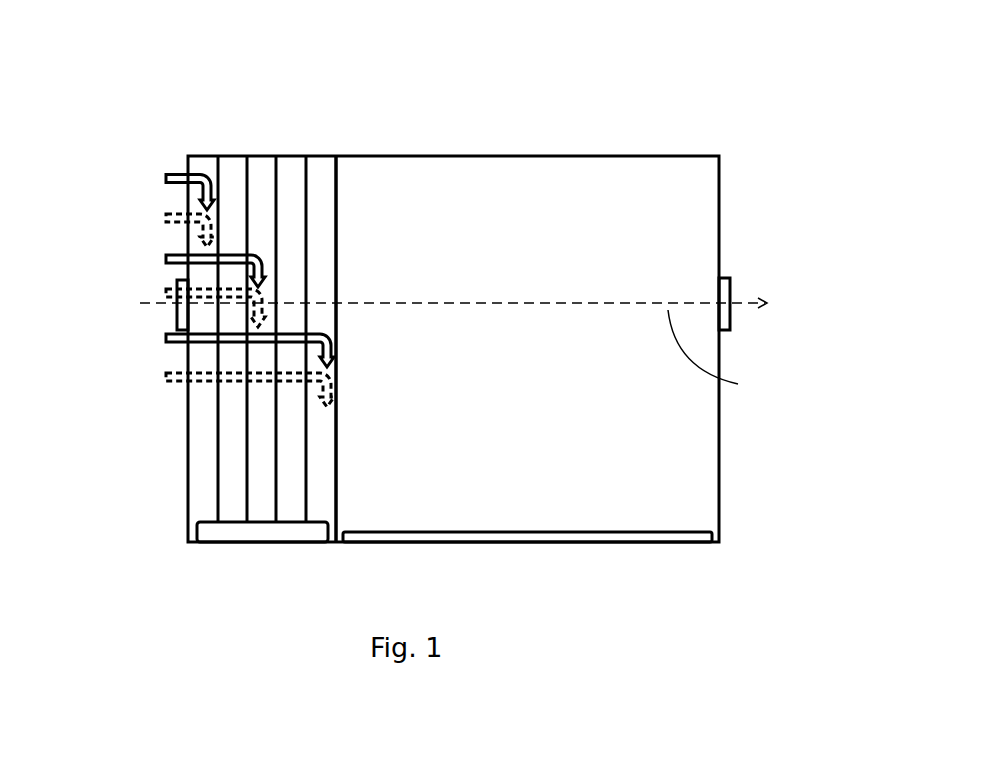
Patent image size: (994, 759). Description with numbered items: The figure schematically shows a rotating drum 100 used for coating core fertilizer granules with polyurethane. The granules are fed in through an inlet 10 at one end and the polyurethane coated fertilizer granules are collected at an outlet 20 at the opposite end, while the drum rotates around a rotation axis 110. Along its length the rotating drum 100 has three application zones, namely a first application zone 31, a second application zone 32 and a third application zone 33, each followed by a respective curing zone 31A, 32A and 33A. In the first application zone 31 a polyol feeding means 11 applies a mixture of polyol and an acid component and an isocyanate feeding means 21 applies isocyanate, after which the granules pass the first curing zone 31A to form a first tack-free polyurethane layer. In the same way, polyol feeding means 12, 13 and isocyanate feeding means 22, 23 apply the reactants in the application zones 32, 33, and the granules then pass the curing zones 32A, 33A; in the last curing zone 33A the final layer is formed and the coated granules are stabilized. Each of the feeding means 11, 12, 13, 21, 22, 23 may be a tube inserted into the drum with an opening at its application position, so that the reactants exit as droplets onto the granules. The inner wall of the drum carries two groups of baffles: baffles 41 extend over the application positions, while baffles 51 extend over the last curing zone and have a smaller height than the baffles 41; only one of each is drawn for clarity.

The rotating drum 100 is at (768, 114).
The rotation axis 110 is at (732, 353).
The inlet 10 is at (175, 286).
The outlet 20 is at (730, 297).
The polyol feeding means 11 is at (165, 181).
The polyol feeding means 12 is at (165, 259).
The polyol feeding means 13 is at (165, 340).
The isocyanate feeding means 21 is at (165, 218).
The isocyanate feeding means 22 is at (165, 296).
The isocyanate feeding means 23 is at (165, 381).
The first application zone 31 is at (198, 168).
The first curing zone 31A is at (227, 170).
The second application zone 32 is at (258, 168).
The second curing zone 32A is at (292, 173).
The third application zone 33 is at (315, 168).
The last curing zone 33A is at (363, 177).
The baffle 41 is at (333, 543).
The baffle 51 is at (572, 543).